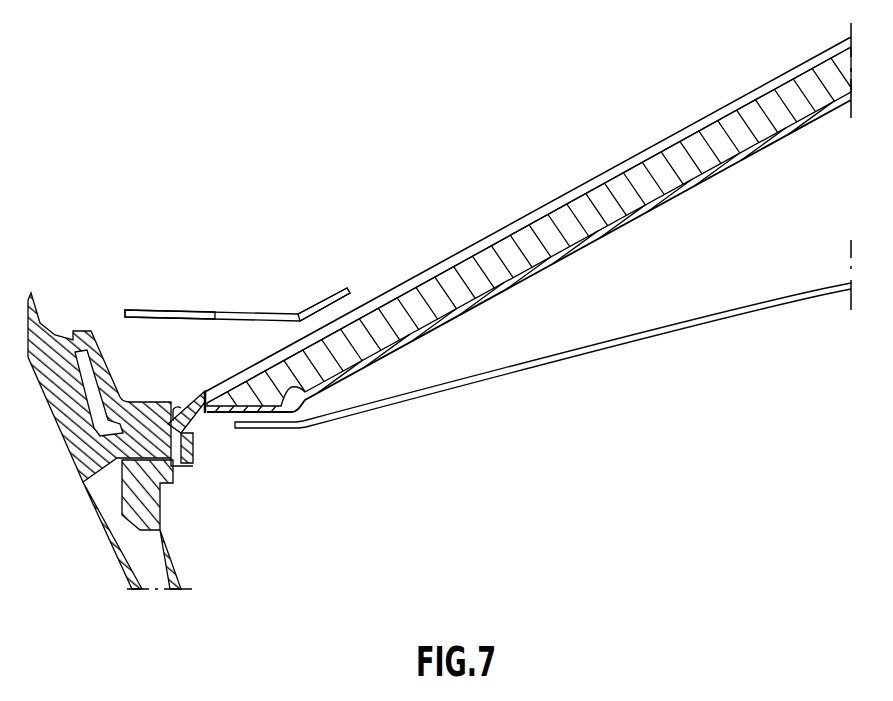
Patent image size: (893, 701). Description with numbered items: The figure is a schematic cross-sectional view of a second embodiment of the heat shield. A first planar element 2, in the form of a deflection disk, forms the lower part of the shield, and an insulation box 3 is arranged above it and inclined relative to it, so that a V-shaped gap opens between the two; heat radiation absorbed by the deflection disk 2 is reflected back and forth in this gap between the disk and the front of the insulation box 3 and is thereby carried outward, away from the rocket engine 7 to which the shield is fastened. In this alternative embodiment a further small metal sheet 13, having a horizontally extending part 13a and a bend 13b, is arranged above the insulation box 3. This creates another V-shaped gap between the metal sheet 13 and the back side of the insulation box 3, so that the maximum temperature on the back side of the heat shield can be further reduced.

The first planar element 2 is at (684, 342).
The insulation box 3 is at (633, 145).
The rocket engine 7 is at (94, 545).
The small metal sheet 13 is at (282, 282).
The horizontally extending part 13a is at (150, 308).
The bend 13b is at (333, 290).